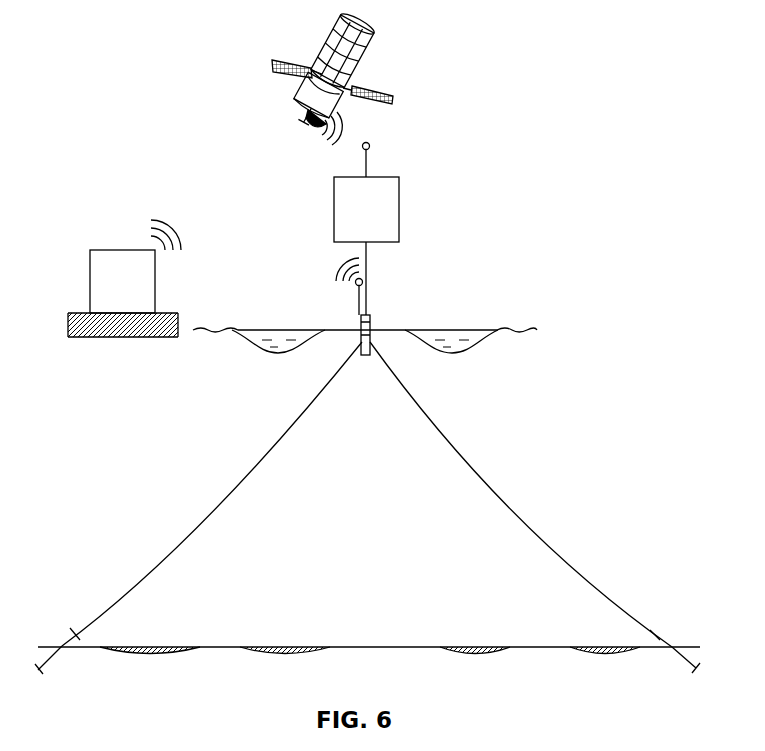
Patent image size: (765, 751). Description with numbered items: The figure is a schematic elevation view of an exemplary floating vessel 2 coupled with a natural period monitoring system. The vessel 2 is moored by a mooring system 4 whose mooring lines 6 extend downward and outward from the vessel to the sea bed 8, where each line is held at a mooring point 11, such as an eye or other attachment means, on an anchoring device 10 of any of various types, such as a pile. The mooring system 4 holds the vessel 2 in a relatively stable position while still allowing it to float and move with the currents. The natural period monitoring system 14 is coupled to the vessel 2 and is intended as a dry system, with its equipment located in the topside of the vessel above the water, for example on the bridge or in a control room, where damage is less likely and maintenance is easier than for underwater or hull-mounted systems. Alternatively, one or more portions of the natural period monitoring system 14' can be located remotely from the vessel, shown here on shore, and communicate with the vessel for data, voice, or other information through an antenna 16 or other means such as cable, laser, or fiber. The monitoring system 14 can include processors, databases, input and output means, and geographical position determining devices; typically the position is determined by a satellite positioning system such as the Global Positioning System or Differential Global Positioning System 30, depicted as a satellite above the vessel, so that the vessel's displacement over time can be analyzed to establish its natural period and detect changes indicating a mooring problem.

The vessel 2 is at (372, 328).
The mooring system 4 is at (226, 418).
The mooring lines 6 is at (168, 557).
The sea bed 8 is at (365, 646).
The anchoring device 10 is at (62, 650).
The mooring point 11 is at (78, 636).
The natural period monitoring system 14 is at (380, 229).
The remotely located natural period monitoring system portion 14' is at (124, 278).
The antenna 16 is at (355, 288).
The Global Positioning System or Differential Global Positioning System 30 is at (374, 88).